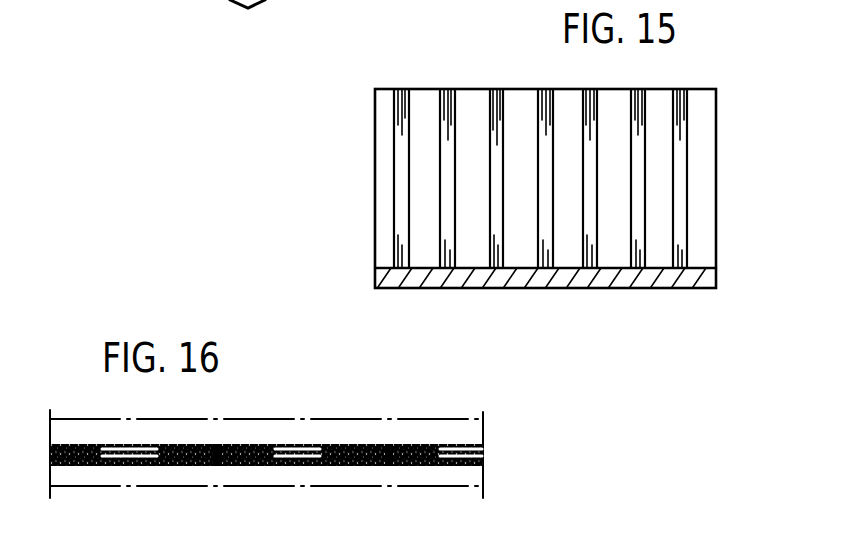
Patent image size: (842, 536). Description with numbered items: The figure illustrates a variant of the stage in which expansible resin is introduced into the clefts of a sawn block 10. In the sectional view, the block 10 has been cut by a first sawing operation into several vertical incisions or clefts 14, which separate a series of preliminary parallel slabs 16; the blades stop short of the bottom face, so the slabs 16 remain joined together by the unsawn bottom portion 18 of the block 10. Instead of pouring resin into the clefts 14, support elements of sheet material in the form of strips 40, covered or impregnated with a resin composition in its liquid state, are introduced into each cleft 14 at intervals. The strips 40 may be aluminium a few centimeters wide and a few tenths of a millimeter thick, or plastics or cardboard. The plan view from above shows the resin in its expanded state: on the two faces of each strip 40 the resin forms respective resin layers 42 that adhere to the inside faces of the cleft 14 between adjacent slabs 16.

In FIG. 15, the block 10 is at (716, 150).
In FIG. 15, the cleft 14 is at (388, 172).
In FIG. 16, the cleft 14 is at (388, 467).
In FIG. 16, the preliminary parallel slab 16 is at (423, 433).
In FIG. 15, the unsawn bottom portion 18 is at (392, 290).
In FIG. 15, the strip 40 is at (449, 89).
In FIG. 16, the strip 40 is at (126, 448).
In FIG. 16, the resin layer 42 is at (190, 447).